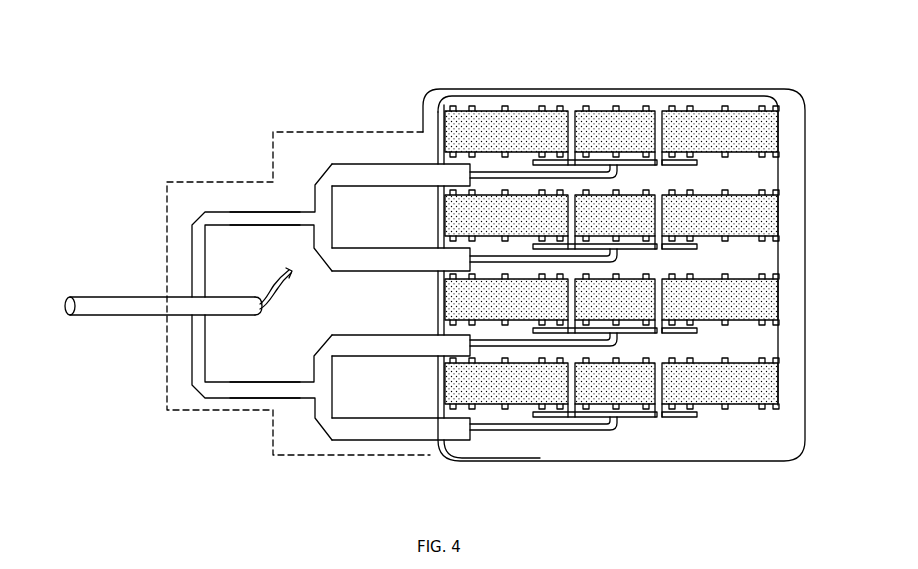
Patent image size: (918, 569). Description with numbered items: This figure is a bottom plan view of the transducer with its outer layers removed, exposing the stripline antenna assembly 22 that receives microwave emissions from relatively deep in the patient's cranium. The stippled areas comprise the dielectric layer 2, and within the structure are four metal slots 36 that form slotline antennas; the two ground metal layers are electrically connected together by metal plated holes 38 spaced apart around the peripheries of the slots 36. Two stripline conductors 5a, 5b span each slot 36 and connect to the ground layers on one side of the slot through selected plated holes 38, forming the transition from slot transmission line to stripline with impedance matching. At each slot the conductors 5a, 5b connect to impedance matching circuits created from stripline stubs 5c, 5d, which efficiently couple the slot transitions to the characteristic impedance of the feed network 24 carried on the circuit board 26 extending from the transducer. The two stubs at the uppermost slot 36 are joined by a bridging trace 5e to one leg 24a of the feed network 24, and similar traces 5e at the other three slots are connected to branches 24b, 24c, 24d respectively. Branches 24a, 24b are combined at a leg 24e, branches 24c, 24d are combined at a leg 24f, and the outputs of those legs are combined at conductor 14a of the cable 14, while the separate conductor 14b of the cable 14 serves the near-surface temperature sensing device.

The stripline antenna assembly 22 is at (666, 64).
The dielectric layer 2 is at (491, 221).
The metal slot 36 is at (776, 132).
The metal plated hole 38 is at (722, 106).
The stripline conductor 5a is at (567, 124).
The stripline conductor 5b is at (655, 124).
The stripline stub 5c is at (538, 158).
The stripline stub 5d is at (698, 162).
The bridging trace 5e is at (616, 168).
The feed network 24 is at (188, 249).
The leg of feed network 24a is at (363, 167).
The branch of feed network 24b is at (385, 265).
The branch of feed network 24c is at (334, 348).
The branch of feed network 24d is at (410, 430).
The leg of feed network 24e is at (263, 215).
The leg of feed network 24f is at (220, 393).
The circuit board 26 is at (171, 180).
The cable 14 is at (124, 316).
The conductor of cable 14a is at (203, 306).
The conductor of cable 14b is at (260, 290).